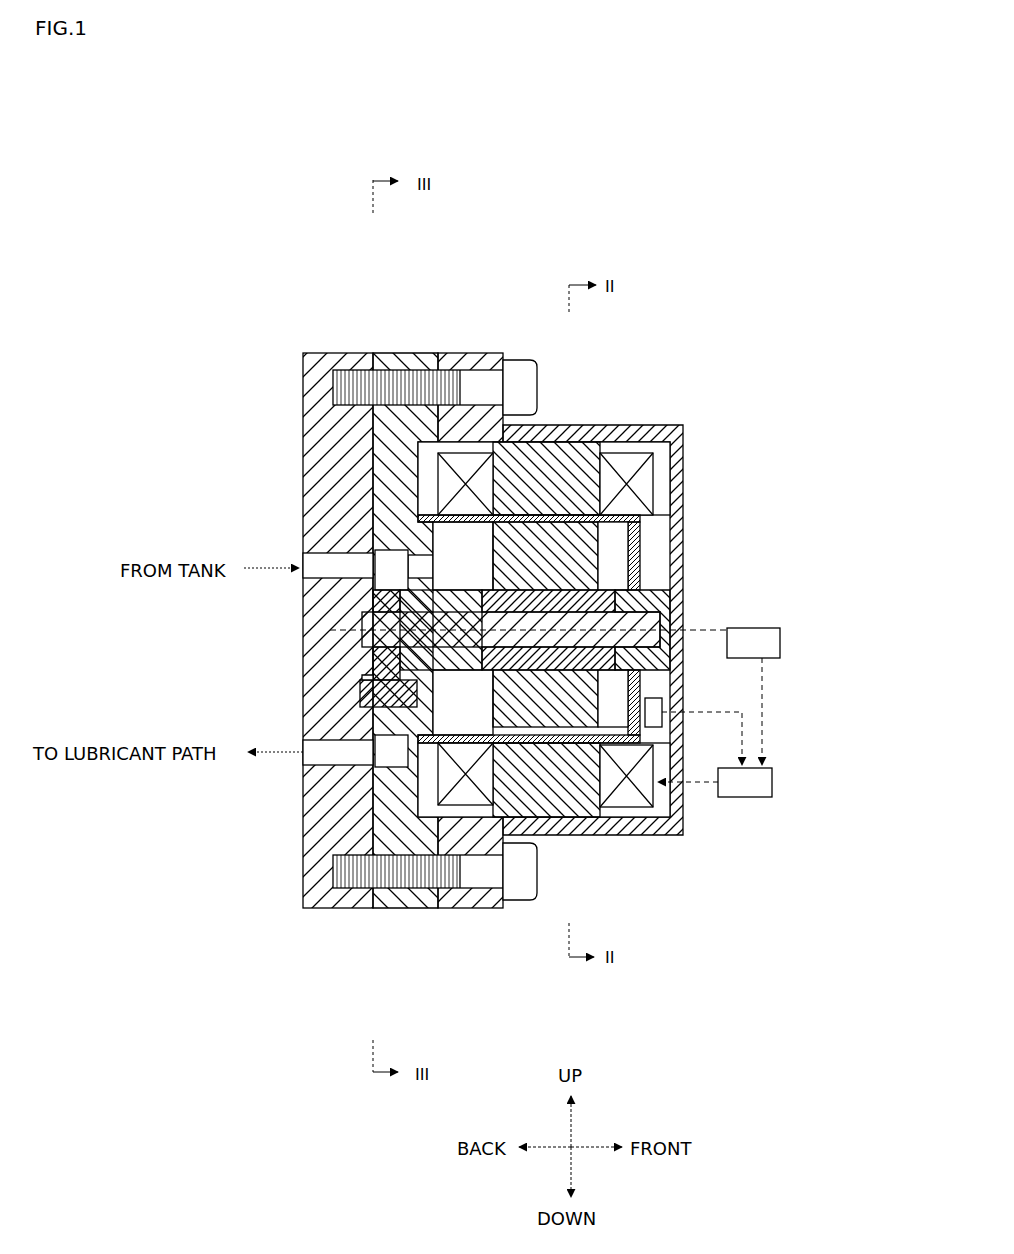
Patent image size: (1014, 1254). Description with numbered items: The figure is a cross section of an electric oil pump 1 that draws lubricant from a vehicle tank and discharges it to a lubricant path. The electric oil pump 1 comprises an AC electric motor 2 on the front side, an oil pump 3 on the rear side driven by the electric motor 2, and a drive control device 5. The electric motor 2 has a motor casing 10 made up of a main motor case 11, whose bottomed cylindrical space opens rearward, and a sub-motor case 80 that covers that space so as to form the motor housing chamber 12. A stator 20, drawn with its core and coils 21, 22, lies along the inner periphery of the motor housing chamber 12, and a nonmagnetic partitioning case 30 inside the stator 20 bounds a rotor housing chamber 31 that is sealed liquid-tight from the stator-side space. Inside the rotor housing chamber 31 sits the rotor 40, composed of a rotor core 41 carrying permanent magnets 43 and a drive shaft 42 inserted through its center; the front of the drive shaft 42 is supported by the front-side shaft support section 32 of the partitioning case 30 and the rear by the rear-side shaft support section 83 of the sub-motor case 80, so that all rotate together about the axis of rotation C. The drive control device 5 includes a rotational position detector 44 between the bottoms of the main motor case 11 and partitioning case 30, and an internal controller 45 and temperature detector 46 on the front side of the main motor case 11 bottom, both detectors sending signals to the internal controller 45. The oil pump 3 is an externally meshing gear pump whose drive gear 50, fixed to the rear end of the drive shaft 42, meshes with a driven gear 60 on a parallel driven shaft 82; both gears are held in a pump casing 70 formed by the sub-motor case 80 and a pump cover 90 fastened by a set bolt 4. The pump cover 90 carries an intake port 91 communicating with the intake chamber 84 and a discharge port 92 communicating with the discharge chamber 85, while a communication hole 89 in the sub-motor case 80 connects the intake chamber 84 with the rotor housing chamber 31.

The electric oil pump 1 is at (752, 315).
The AC electric motor 2 is at (655, 368).
The oil pump 3 is at (404, 630).
The set bolt 4 is at (517, 365).
The drive control device 5 is at (746, 670).
The motor casing 10 is at (503, 293).
The main motor case 11 is at (470, 355).
The motor housing chamber 12 is at (667, 558).
The stator 20 is at (580, 612).
The stator core 21 is at (553, 450).
The coil 22 is at (552, 380).
The partitioning case 30 is at (640, 582).
The rotor housing chamber 31 is at (476, 723).
The front-side shaft support section 32 is at (655, 618).
The rotor 40 is at (564, 630).
The rotor core 41 is at (490, 590).
The drive shaft 42 is at (470, 600).
The permanent magnets 43 is at (585, 566).
The rotational position detector 44 is at (660, 716).
The internal controller 45 is at (772, 782).
The temperature detector 46 is at (780, 641).
The drive gear 50 is at (330, 600).
The driven gear 60 is at (360, 693).
The pump casing 70 is at (448, 975).
The sub-motor case 80 is at (410, 355).
The driven shaft 82 is at (362, 678).
The rear-side shaft support section 83 is at (433, 637).
The intake chamber 84 is at (406, 583).
The discharge chamber 85 is at (406, 765).
The communication hole 89 is at (436, 565).
The pump cover 90 is at (355, 910).
The intake port 91 is at (325, 560).
The discharge port 92 is at (330, 770).
The axis of rotation C is at (330, 645).